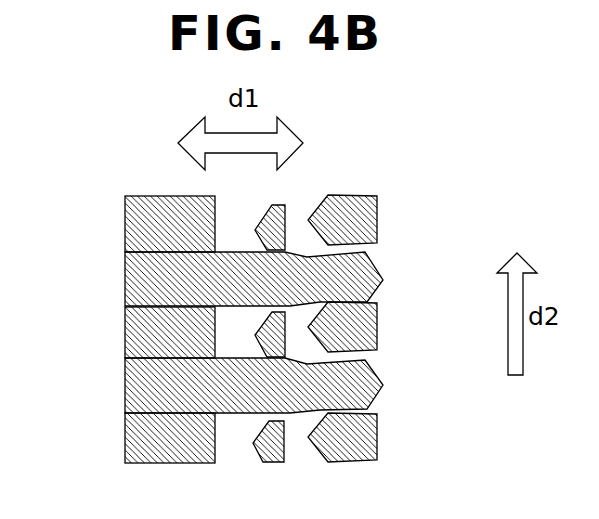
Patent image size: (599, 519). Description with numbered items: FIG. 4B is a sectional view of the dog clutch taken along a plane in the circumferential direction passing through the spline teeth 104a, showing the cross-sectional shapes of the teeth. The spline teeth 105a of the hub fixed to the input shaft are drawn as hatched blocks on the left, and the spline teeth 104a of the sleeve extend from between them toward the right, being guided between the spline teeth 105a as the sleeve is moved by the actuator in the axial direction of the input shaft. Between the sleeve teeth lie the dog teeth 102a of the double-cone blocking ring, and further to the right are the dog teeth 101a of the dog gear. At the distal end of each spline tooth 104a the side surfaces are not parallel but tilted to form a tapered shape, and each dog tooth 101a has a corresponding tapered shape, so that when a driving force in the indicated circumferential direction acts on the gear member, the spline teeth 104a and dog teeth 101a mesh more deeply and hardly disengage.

The dog teeth 101a is at (378, 214).
The dog teeth 102a is at (276, 205).
The spline teeth 104a is at (372, 263).
The spline teeth 105a is at (125, 233).